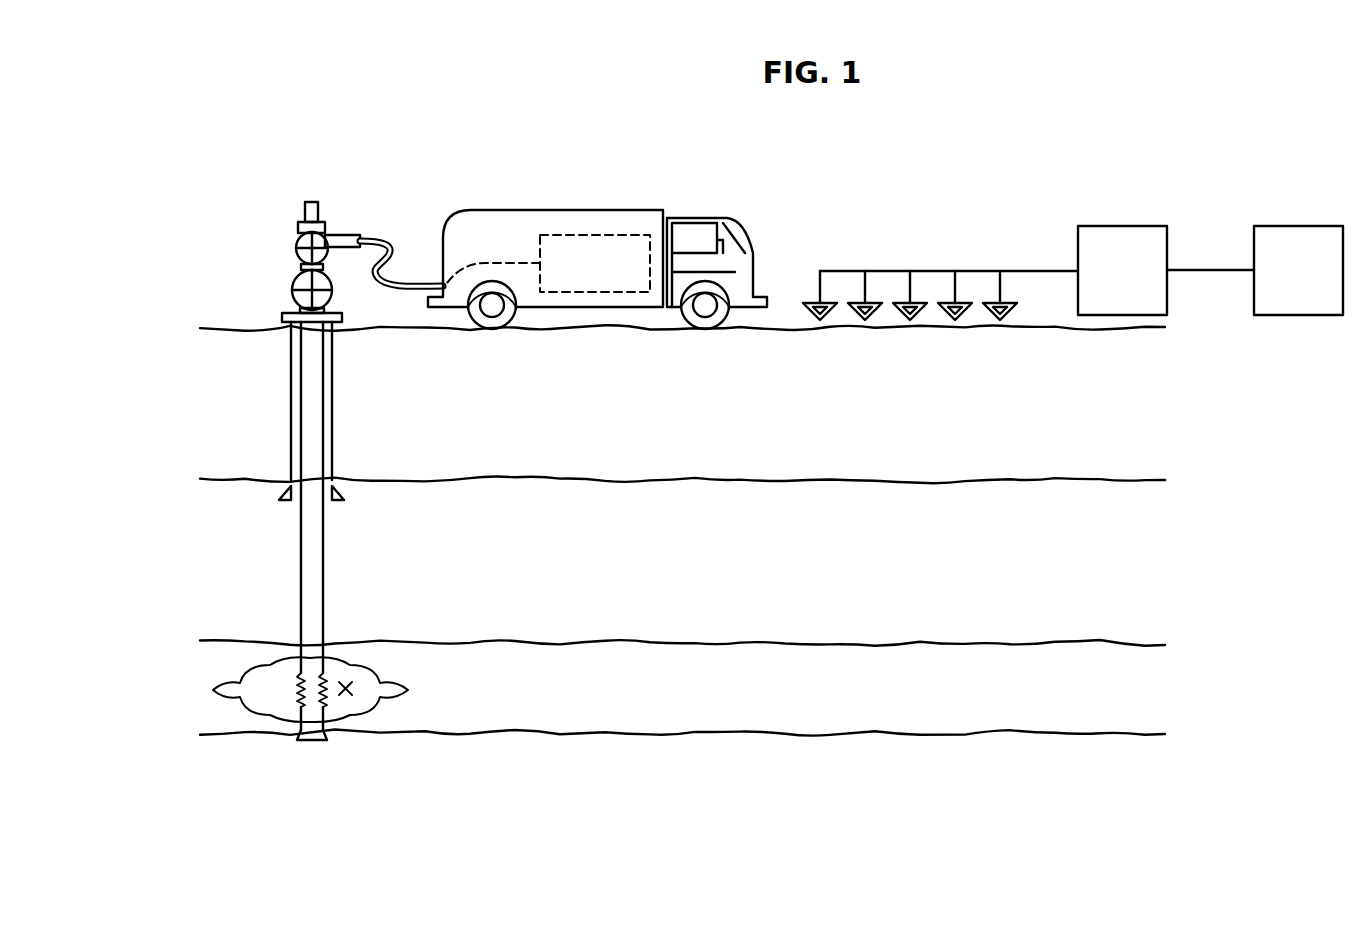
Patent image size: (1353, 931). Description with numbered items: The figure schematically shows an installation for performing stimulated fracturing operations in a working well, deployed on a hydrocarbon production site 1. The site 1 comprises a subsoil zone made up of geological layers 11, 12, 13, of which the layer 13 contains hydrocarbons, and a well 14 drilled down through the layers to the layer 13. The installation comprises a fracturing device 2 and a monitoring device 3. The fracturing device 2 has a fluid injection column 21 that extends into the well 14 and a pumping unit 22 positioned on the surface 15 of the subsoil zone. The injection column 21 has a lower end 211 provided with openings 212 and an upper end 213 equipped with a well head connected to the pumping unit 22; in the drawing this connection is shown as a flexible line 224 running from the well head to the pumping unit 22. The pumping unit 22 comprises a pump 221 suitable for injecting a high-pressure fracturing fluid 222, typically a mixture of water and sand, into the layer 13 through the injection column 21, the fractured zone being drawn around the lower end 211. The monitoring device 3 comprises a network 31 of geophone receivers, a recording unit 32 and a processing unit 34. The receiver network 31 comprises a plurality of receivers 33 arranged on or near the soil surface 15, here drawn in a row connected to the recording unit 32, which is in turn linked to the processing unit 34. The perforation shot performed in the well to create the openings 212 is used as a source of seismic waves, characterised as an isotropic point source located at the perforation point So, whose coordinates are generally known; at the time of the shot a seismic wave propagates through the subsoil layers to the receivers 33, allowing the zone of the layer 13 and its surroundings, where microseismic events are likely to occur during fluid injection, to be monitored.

The hydrocarbon production site 1 is at (202, 271).
The fracturing device 2 is at (469, 175).
The monitoring device 3 is at (940, 224).
The geological layer 11 is at (749, 417).
The geological layer 12 is at (748, 584).
The geological layer 13 is at (748, 700).
The well 14 is at (332, 410).
The surface 15 is at (772, 328).
The fluid injection column 21 is at (347, 563).
The pumping unit 22 is at (520, 209).
The receiver network 31 is at (887, 271).
The recording unit 32 is at (1123, 226).
The receivers 33 is at (827, 310).
The processing unit 34 is at (1298, 226).
The lower end 211 is at (312, 727).
The openings 212 is at (337, 683).
The upper end 213 is at (300, 235).
The pump 221 is at (592, 235).
The fracturing fluid 222 is at (410, 688).
The injection hose 224 is at (372, 240).
The perforation point So is at (349, 694).